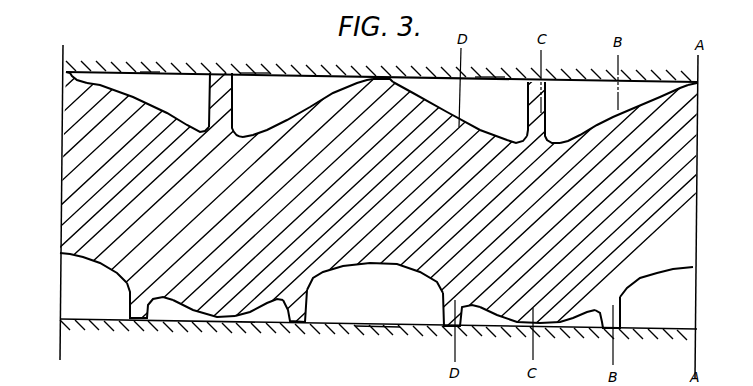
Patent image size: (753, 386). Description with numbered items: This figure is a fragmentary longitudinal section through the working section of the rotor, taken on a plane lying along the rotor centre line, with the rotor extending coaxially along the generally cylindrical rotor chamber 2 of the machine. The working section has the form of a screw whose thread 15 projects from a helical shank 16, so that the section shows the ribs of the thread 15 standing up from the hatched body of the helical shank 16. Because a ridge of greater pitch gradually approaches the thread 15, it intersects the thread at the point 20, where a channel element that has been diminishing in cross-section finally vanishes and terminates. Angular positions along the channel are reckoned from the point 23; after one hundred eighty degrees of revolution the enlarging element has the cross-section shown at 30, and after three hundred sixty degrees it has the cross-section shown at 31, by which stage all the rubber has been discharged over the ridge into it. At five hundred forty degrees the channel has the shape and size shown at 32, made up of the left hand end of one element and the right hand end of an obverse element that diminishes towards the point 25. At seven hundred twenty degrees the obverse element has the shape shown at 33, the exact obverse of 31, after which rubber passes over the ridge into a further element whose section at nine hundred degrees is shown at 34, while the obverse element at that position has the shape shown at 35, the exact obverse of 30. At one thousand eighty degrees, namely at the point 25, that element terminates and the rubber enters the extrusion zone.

The rotor chamber 2 is at (149, 78).
The thread 15 is at (212, 96).
The helical shank 16 is at (122, 112).
The intersection point 20 is at (374, 85).
The reference point 23 is at (698, 80).
The left hand end point 25 is at (68, 73).
The cross-section at 180 degrees 30 is at (597, 316).
The cross-section at 360 degrees 31 is at (488, 90).
The channel cross-section at 540 degrees 32 is at (370, 313).
The cross-section at 720 degrees 33 is at (254, 85).
The cross-section at 900 degrees 34 is at (271, 314).
The cross-section at 900 degrees 35 is at (167, 309).